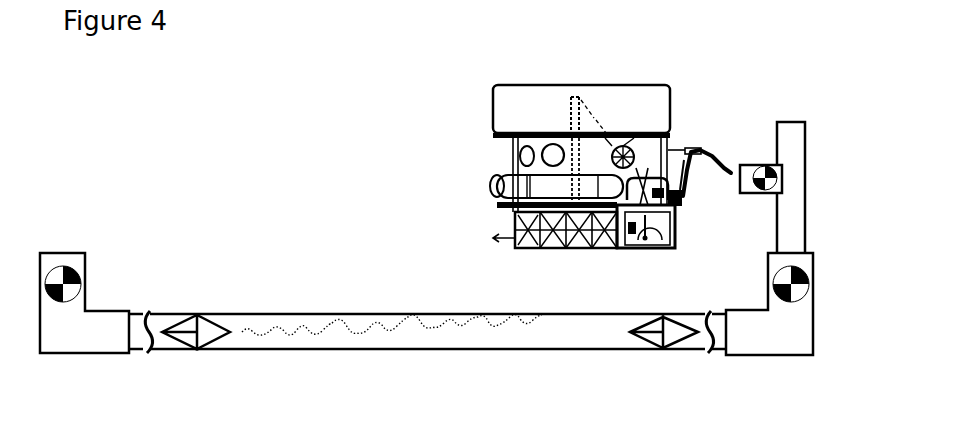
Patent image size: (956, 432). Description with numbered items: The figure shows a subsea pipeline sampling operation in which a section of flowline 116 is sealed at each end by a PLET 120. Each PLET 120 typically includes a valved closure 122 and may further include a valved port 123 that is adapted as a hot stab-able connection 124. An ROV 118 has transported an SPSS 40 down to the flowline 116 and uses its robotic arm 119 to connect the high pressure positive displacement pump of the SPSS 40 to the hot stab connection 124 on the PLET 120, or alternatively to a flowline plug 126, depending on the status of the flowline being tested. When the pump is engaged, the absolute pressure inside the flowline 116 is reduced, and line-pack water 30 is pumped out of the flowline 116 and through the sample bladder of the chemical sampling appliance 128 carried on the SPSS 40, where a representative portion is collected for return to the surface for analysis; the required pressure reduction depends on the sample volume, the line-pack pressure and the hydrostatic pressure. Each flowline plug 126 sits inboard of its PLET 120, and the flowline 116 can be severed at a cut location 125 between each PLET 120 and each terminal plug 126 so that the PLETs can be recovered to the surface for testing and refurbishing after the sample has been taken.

The line-pack water 30 is at (333, 335).
The SPSS 40 is at (513, 225).
The flowline 116 is at (293, 313).
The ROV 118 is at (622, 120).
The robotic arm 119 is at (703, 152).
The PLET 120 is at (85, 337).
The valved closure 122 is at (72, 267).
The valved port 123 is at (777, 177).
The hot stab connection 124 is at (737, 163).
The cut location 125 is at (155, 353).
The flowline plug 126 is at (213, 320).
The chemical sampling appliance 128 is at (640, 252).